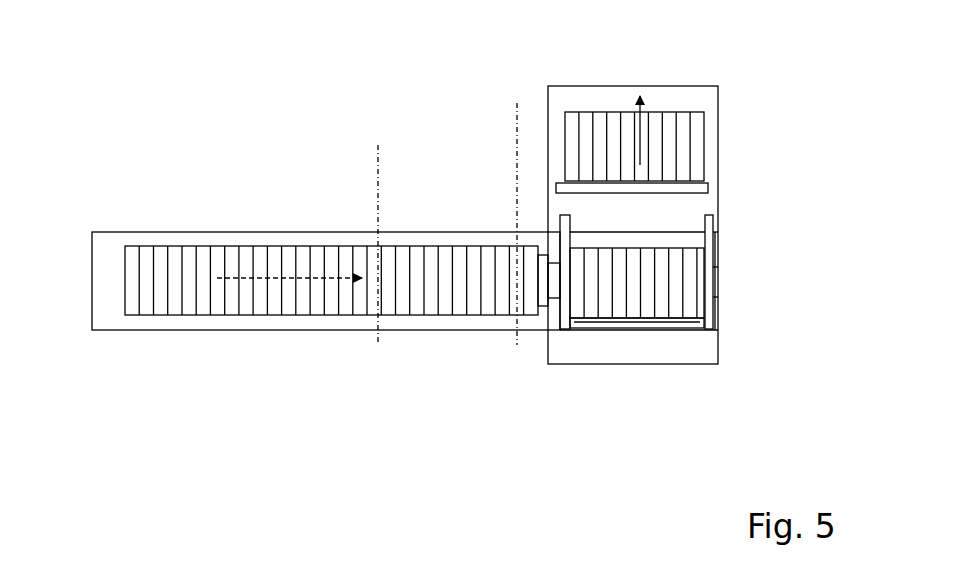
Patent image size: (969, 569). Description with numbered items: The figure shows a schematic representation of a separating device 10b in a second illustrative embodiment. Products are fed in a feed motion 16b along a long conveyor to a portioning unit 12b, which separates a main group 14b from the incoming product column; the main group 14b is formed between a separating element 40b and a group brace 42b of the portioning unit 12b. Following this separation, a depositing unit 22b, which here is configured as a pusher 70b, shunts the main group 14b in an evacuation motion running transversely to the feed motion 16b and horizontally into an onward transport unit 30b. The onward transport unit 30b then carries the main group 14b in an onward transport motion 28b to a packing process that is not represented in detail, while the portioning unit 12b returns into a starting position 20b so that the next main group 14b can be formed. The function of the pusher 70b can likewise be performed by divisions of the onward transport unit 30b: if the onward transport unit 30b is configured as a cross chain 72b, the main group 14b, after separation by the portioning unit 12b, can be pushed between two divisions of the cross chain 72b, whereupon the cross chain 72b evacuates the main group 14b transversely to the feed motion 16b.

The separating device 10b is at (412, 106).
The portioning unit 12b is at (533, 347).
The main group 14b is at (588, 305).
The feed motion 16b is at (285, 232).
The starting position 20b is at (378, 190).
The depositing unit 22b is at (648, 328).
The onward transport motion 28b is at (638, 138).
The onward transport unit 30b is at (708, 107).
The separating element 40b is at (563, 331).
The group brace 42b is at (707, 323).
The pusher 70b is at (682, 324).
The cross chain 72b is at (702, 187).